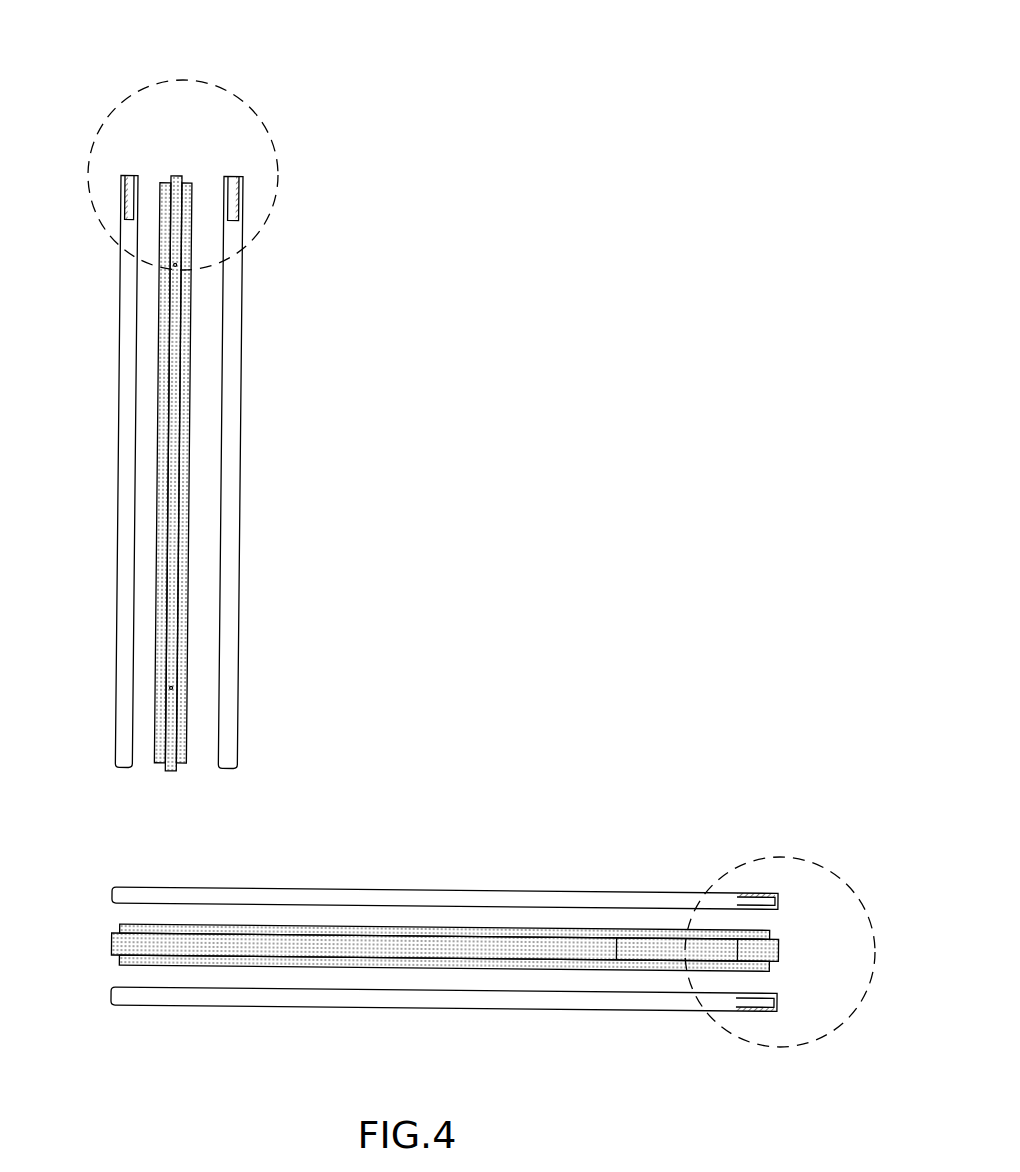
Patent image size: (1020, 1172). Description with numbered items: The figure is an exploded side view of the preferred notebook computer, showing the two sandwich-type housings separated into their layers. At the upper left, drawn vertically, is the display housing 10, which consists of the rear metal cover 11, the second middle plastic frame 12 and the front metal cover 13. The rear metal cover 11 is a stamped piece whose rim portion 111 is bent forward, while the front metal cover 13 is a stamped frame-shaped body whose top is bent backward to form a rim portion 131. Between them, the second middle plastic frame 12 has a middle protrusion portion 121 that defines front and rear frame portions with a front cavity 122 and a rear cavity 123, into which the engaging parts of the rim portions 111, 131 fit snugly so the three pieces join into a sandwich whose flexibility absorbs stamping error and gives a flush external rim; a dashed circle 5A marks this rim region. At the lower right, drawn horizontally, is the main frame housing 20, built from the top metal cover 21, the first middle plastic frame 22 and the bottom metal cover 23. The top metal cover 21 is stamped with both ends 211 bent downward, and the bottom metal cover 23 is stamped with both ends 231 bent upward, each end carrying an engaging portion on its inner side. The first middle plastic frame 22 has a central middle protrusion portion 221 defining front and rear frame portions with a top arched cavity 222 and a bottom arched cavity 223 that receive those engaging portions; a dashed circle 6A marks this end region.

The display housing 10 is at (191, 427).
The rear metal cover 11 is at (160, 437).
The rim portion 111 is at (130, 177).
The second middle plastic frame 12 is at (196, 401).
The middle protrusion portion 121 is at (174, 177).
The front cavity 122 is at (160, 181).
The rear cavity 123 is at (188, 180).
The front metal cover 13 is at (291, 467).
The rim portion 131 is at (232, 178).
The detail region of display housing rim 5A is at (287, 148).
The main frame housing 20 is at (488, 946).
The top metal cover 21 is at (473, 857).
The bending ends 211 is at (780, 900).
The first middle plastic frame 22 is at (519, 938).
The middle protrusion portion 221 is at (780, 951).
The top arched cavity 222 is at (773, 937).
The bottom arched cavity 223 is at (770, 968).
The bottom metal cover 23 is at (491, 964).
The bending ends 231 is at (780, 1003).
The detail region of main frame housing end 6A is at (733, 862).